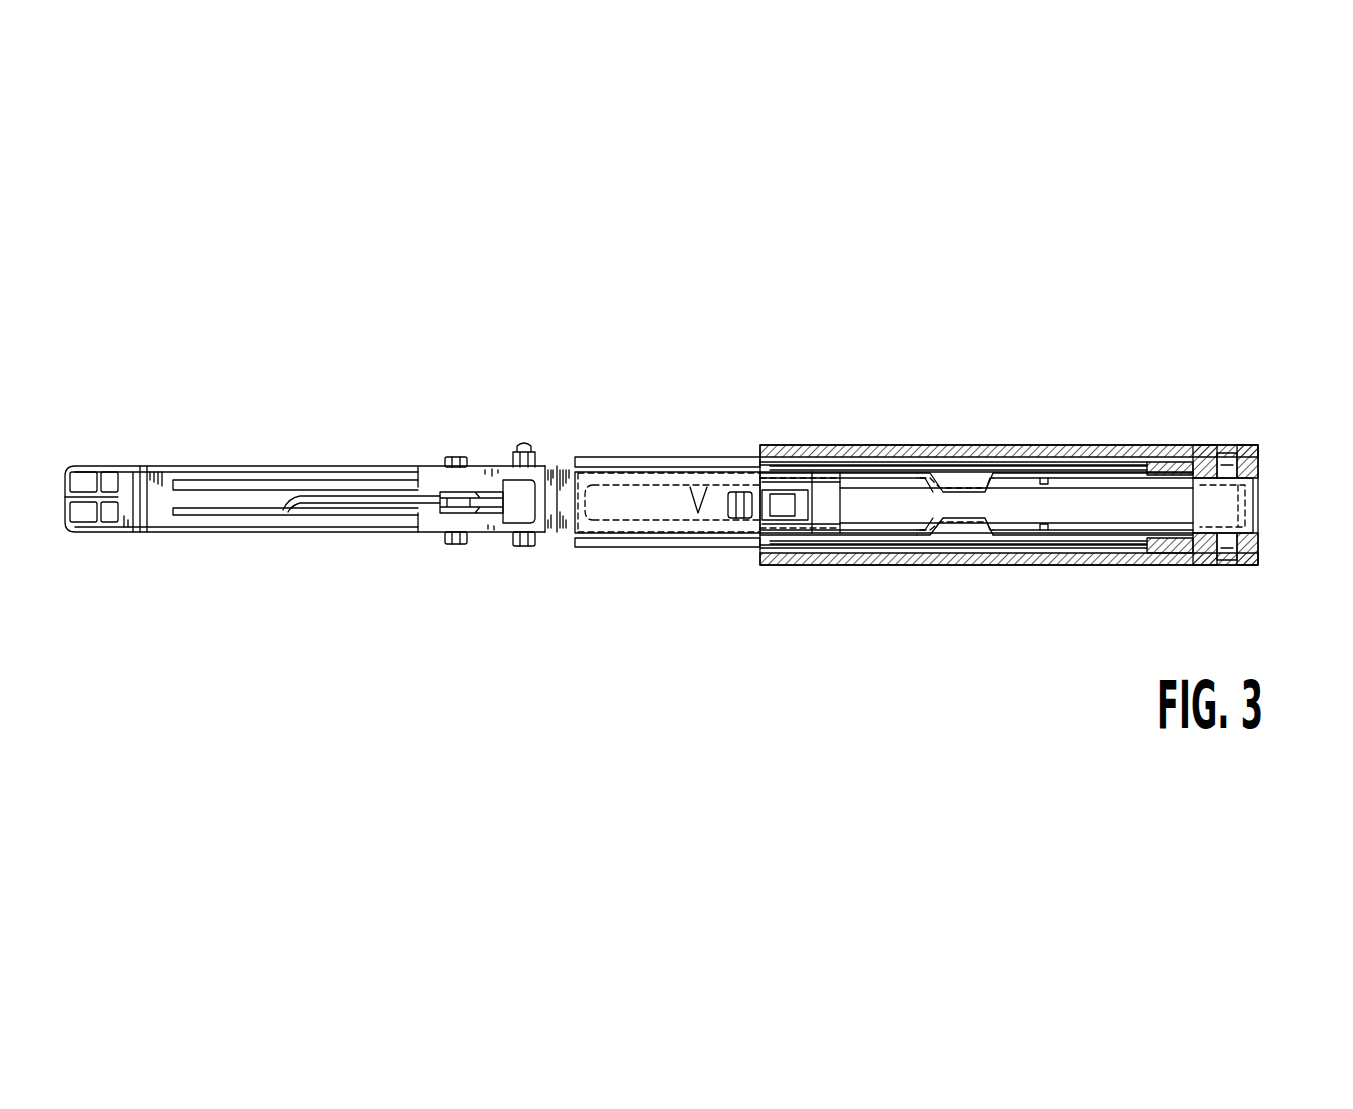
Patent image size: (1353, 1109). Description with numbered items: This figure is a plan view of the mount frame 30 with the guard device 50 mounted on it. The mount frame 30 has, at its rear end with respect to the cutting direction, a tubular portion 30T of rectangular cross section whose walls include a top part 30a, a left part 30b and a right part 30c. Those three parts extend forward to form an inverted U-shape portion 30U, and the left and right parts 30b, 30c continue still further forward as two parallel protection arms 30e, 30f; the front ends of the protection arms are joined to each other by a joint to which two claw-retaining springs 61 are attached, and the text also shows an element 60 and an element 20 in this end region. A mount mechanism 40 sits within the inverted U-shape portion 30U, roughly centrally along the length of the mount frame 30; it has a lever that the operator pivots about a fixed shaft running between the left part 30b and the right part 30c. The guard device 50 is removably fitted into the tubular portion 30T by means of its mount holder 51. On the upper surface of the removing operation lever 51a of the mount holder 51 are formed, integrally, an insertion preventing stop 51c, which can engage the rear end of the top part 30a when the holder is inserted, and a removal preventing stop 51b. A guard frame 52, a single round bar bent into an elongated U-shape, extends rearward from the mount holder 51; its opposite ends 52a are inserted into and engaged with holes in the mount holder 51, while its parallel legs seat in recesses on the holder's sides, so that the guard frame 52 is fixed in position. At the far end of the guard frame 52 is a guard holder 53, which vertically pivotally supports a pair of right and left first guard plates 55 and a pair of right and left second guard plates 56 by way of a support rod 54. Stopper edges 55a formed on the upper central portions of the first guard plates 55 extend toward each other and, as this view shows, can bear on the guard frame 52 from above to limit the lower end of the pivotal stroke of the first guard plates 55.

The center rod 20 is at (285, 510).
The mount frame 30 is at (667, 440).
The top part 30a is at (557, 547).
The left part 30b is at (487, 547).
The right part 30c is at (557, 465).
The protection arm 30e is at (291, 535).
The protection arm 30f is at (280, 467).
The tubular portion 30T is at (703, 488).
The inverted U-shape portion 30U is at (487, 458).
The mount mechanism 40 is at (453, 548).
The guard device 50 is at (1122, 445).
The mount holder 51 is at (835, 505).
The removing operation lever 51a is at (785, 500).
The removal preventing stop 51b is at (740, 520).
The insertion preventing stop 51c is at (762, 520).
The guard frame 52 is at (1104, 488).
The opposite ends 52a is at (612, 500).
The guard holder 53 is at (1258, 505).
The support rod 54 is at (1226, 565).
The first guard plates 55 is at (748, 465).
The stopper edges 55a is at (950, 488).
The second guard plates 56 is at (987, 464).
The rod 60 is at (208, 480).
The claw-retaining springs 61 is at (80, 490).